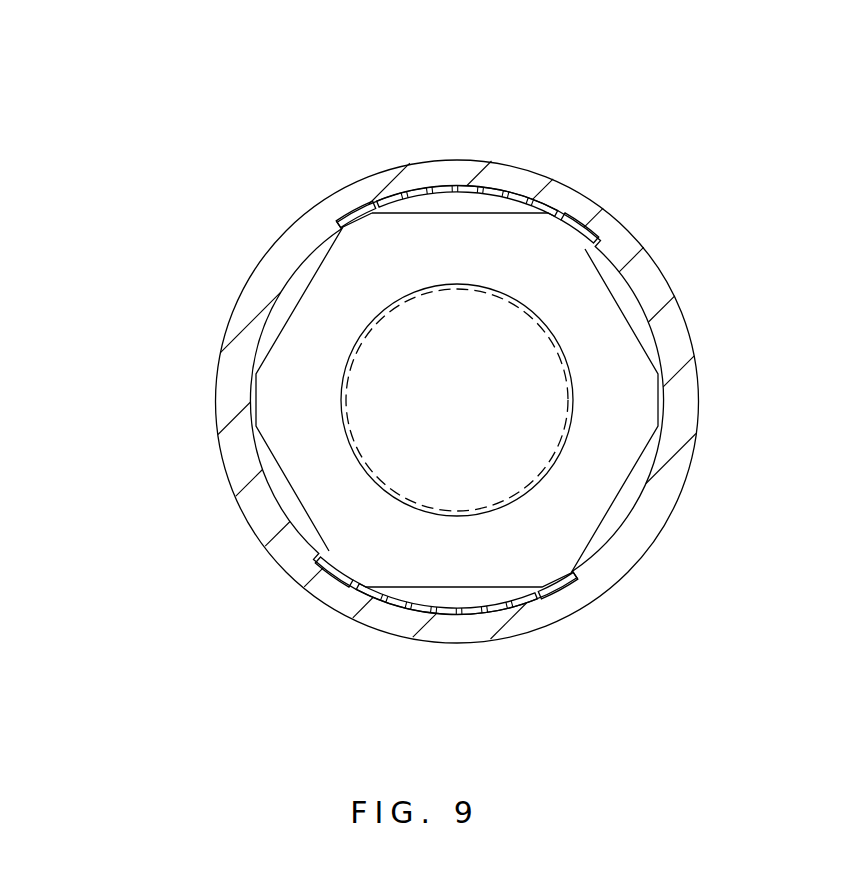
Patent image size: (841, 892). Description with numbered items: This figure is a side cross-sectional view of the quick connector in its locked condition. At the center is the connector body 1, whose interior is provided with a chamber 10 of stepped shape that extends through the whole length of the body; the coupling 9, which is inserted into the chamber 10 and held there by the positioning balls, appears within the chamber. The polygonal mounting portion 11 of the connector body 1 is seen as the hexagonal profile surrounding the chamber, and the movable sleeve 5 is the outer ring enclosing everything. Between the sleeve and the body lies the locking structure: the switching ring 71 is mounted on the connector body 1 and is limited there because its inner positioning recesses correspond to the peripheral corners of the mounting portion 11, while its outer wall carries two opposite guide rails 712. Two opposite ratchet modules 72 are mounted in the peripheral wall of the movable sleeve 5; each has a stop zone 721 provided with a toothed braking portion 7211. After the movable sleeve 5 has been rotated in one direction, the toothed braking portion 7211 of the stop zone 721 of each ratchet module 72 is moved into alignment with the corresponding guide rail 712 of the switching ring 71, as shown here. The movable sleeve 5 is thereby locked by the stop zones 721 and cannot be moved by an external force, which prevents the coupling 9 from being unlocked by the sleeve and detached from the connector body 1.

The connector body 1 is at (534, 400).
The movable sleeve 5 is at (662, 243).
The coupling 9 is at (340, 379).
The chamber 10 is at (343, 417).
The mounting portion 11 is at (612, 462).
The switching ring 71 is at (427, 379).
The guide rail 712 is at (583, 223).
The ratchet module 72 is at (456, 400).
The stop zone 721 is at (456, 399).
The toothed braking portion 7211 is at (500, 190).